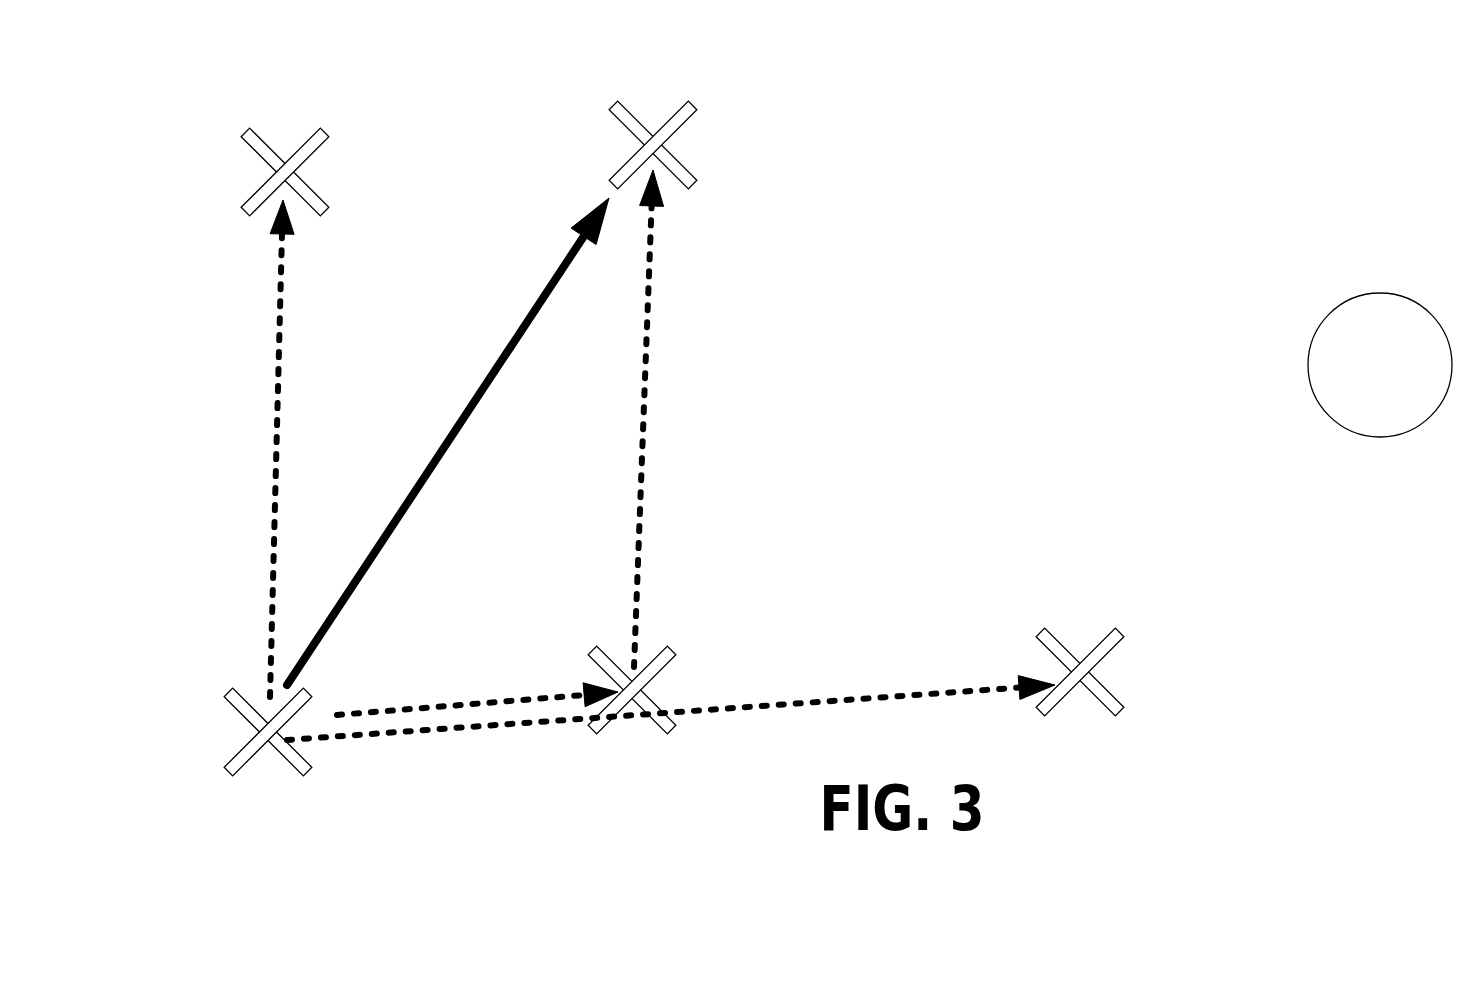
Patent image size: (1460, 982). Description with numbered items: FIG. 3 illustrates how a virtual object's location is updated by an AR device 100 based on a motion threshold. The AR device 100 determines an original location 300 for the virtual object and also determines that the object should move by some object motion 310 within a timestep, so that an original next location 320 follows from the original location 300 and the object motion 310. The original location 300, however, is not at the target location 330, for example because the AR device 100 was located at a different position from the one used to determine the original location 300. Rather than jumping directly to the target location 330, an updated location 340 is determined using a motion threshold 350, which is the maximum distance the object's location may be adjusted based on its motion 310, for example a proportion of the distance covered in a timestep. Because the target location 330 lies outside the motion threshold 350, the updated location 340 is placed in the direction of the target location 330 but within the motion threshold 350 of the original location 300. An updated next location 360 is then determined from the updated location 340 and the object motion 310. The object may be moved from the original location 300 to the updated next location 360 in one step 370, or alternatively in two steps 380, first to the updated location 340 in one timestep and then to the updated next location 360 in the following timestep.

The AR device 100 is at (1380, 365).
The original location 300 is at (265, 747).
The object motion 310 is at (256, 462).
The original next location 320 is at (292, 140).
The target location 330 is at (1070, 632).
The updated location 340 is at (660, 645).
The motion threshold 350 is at (543, 683).
The updated next location 360 is at (672, 136).
The one step 370 is at (494, 335).
The two steps 380 is at (660, 386).